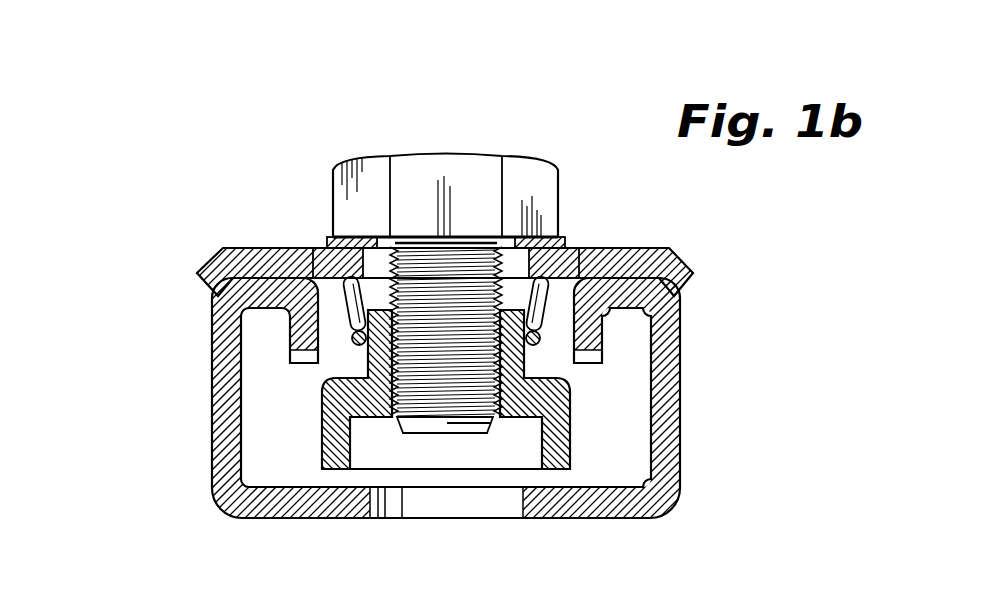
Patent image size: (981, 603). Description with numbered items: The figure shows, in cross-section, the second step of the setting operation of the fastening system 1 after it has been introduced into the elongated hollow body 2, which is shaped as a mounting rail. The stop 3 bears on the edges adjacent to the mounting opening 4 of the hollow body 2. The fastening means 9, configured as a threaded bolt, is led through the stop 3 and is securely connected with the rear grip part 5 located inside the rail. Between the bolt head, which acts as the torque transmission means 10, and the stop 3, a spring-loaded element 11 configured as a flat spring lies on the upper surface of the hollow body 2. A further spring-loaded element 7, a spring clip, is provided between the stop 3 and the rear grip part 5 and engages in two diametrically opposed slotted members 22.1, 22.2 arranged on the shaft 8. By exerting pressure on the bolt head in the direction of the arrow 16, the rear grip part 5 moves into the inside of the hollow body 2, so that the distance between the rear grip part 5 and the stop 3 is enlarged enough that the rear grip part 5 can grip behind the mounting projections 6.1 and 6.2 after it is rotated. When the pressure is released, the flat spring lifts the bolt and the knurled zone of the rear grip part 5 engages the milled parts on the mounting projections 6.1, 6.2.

The fastening system 1 is at (220, 110).
The elongated hollow body 2 is at (222, 451).
The stop 3 is at (637, 263).
The mounting opening 4 is at (562, 296).
The rear grip part 5 is at (323, 410).
The mounting projection 6.1 is at (303, 335).
The mounting projection 6.2 is at (600, 333).
The spring-loaded element 7 is at (347, 303).
The shaft 8 is at (600, 319).
The fastening means 9 is at (442, 250).
The torque transmission means 10 is at (473, 184).
The spring-loaded element 11 is at (330, 242).
The arrow 16 is at (445, 122).
The slotted member 22.1 is at (360, 365).
The slotted member 22.2 is at (532, 364).